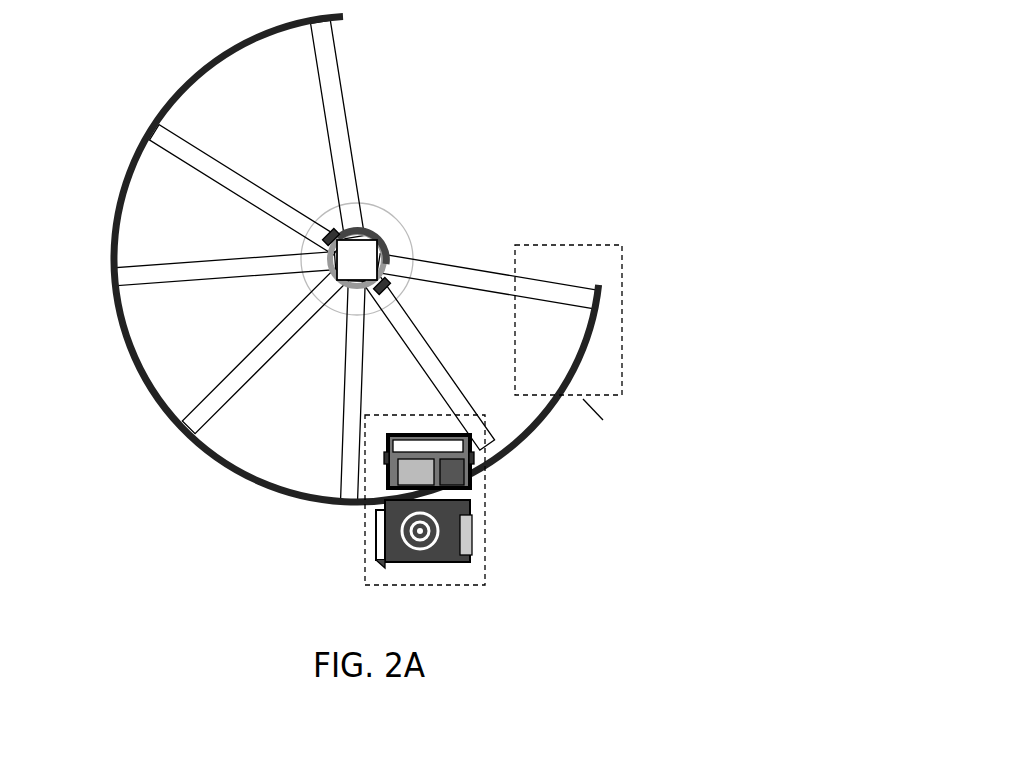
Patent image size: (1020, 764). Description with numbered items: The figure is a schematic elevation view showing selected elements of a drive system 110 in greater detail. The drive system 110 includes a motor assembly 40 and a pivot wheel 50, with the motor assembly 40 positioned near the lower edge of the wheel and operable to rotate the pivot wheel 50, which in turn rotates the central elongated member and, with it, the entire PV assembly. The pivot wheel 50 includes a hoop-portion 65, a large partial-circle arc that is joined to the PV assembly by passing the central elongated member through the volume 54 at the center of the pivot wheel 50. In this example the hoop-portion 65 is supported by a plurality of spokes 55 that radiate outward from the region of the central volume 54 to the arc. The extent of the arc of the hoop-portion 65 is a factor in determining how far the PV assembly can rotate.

The drive system 110 is at (454, 302).
The pivot wheel 50 is at (356, 259).
The hoop-portion 65 is at (186, 68).
The spokes 55 is at (338, 70).
The volume 54 is at (361, 257).
The motor assembly 40 is at (487, 569).